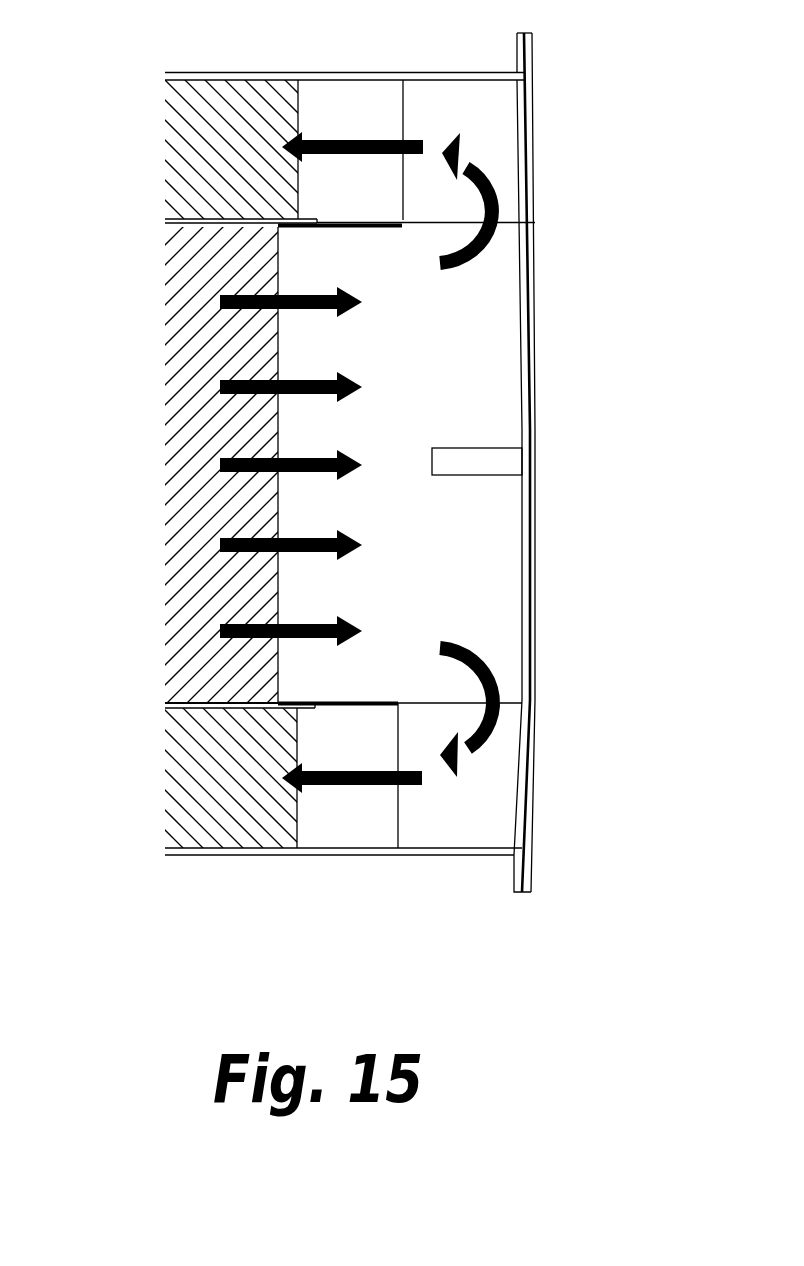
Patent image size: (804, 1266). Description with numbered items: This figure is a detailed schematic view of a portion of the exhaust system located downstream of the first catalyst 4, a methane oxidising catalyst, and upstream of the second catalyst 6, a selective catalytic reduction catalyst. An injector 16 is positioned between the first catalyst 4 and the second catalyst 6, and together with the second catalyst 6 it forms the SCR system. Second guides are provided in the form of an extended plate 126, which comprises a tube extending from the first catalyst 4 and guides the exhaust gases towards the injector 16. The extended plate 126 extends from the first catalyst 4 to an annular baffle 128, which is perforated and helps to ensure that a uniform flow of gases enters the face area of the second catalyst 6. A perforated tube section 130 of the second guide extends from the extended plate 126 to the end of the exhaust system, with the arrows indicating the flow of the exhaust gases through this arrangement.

The first catalyst 4 is at (202, 357).
The second catalyst 6 is at (208, 158).
The injector 16 is at (460, 448).
The extended plate 126 is at (310, 218).
The annular baffle 128 is at (402, 107).
The perforated tube section 130 is at (422, 224).